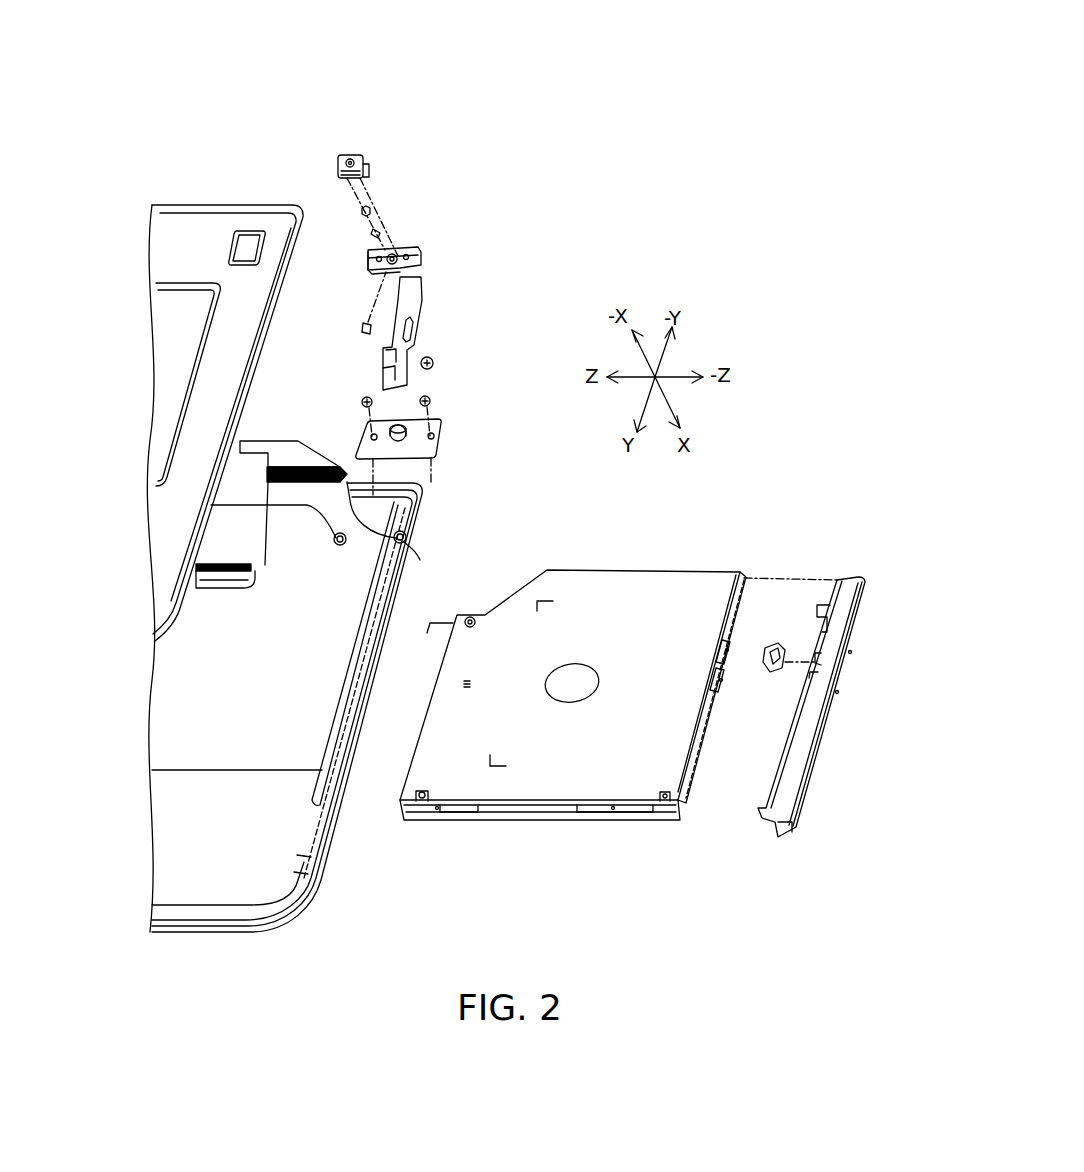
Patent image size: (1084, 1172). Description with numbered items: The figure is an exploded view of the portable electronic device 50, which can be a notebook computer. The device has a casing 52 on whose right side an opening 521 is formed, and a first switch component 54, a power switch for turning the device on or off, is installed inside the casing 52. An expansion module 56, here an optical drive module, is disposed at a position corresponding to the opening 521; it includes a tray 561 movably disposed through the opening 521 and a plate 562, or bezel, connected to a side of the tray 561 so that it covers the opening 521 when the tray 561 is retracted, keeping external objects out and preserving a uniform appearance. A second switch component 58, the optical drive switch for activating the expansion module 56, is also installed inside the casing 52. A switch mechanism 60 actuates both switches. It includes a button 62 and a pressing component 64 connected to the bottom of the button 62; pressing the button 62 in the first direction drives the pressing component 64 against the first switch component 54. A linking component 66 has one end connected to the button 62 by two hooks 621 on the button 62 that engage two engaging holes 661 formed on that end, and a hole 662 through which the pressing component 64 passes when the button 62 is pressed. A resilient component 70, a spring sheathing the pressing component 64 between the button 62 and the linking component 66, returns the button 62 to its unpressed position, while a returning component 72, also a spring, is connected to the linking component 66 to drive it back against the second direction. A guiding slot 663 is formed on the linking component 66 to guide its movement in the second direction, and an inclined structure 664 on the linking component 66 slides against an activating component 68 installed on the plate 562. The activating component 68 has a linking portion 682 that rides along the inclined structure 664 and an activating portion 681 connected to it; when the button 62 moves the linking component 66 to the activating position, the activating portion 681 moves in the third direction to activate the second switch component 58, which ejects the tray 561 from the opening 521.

The portable electronic device 50 is at (708, 66).
The casing 52 is at (350, 860).
The opening 521 is at (415, 592).
The first switch component 54 is at (406, 433).
The expansion module 56 is at (625, 585).
The tray 561 is at (690, 770).
The plate 562 is at (826, 715).
The second switch component 58 is at (713, 662).
The switch mechanism 60 is at (493, 172).
The button 62 is at (354, 156).
The hook 621 is at (369, 171).
The pressing component 64 is at (402, 256).
The linking component 66 is at (414, 290).
The engaging hole 661 is at (417, 258).
The hole 662 is at (372, 262).
The guiding slot 663 is at (415, 327).
The inclined structure 664 is at (406, 368).
The activating component 68 is at (776, 672).
The activating portion 681 is at (768, 662).
The linking portion 682 is at (775, 648).
The resilient component 70 is at (372, 212).
The returning component 72 is at (363, 327).